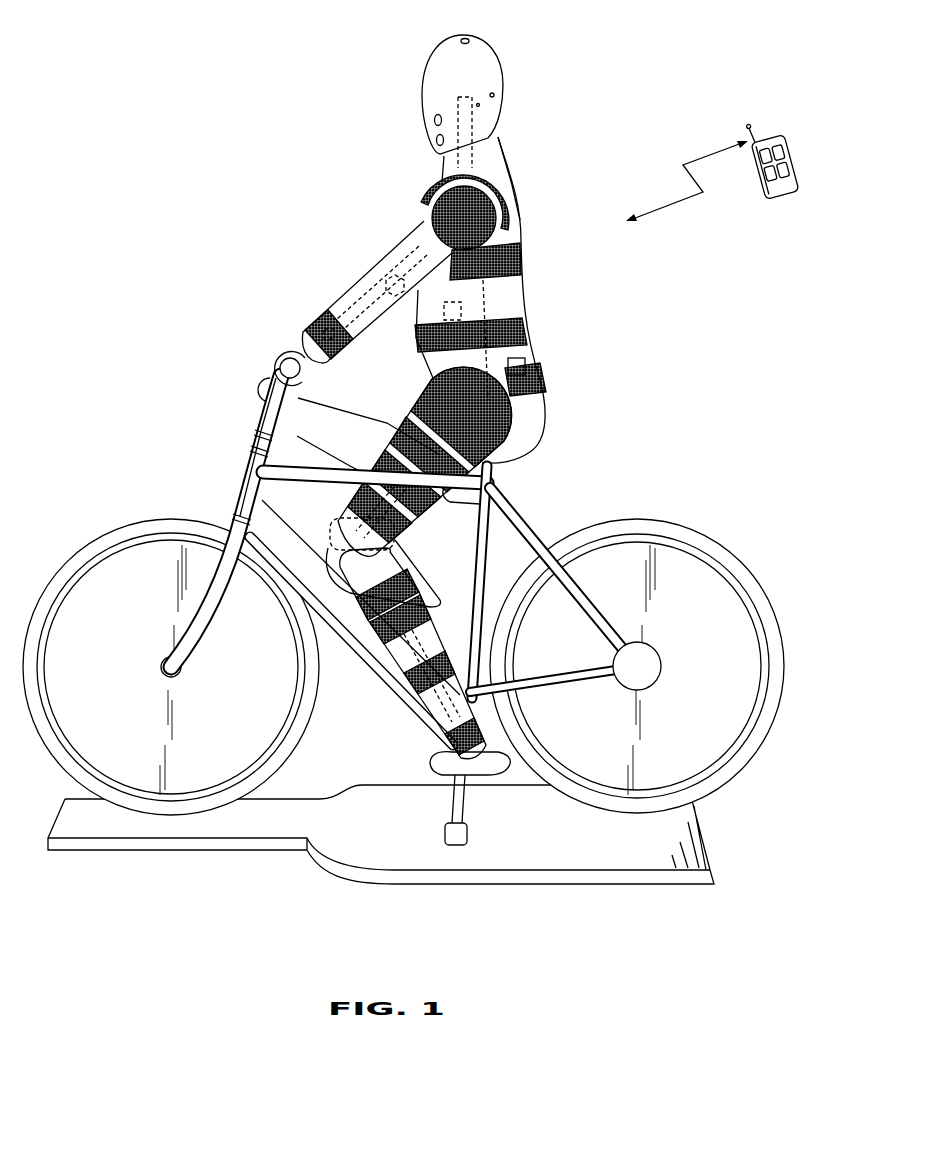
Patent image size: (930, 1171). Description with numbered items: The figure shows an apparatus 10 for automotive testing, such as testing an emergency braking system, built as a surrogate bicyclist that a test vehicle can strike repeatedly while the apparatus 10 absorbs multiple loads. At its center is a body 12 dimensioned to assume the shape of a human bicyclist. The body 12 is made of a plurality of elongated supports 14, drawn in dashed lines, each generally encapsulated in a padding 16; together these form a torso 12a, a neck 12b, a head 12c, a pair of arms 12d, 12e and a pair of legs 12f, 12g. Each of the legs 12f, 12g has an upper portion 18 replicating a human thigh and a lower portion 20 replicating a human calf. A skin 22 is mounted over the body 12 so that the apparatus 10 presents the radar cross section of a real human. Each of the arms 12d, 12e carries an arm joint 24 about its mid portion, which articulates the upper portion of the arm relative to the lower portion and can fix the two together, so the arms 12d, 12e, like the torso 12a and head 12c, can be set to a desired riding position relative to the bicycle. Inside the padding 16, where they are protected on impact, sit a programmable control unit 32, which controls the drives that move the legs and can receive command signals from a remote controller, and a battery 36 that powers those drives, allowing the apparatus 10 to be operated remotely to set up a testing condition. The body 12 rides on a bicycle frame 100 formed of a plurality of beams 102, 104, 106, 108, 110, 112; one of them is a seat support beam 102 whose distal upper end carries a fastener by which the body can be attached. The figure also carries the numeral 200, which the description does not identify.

The apparatus 10 is at (539, 400).
The body 12 is at (533, 260).
The torso 12a is at (526, 332).
The neck 12b is at (493, 137).
The head 12c is at (430, 80).
The arm 12d is at (372, 285).
The arm 12e is at (318, 335).
The leg 12f is at (405, 393).
The leg 12g is at (492, 494).
The elongated supports 14 is at (470, 163).
The padding 16 is at (428, 234).
The upper portion 18 is at (403, 448).
The lower portion 20 is at (400, 655).
The skin 22 is at (512, 268).
The arm joint 24 is at (375, 345).
The programmable control unit 32 is at (461, 311).
The battery 36 is at (527, 365).
The bicycle frame 100 is at (403, 657).
The seat support beam 102 is at (480, 638).
The beam 104 is at (598, 604).
The beam 106 is at (550, 683).
The beam 108 is at (258, 478).
The beam 110 is at (302, 479).
The beam 112 is at (363, 630).
The base platform 200 is at (372, 848).